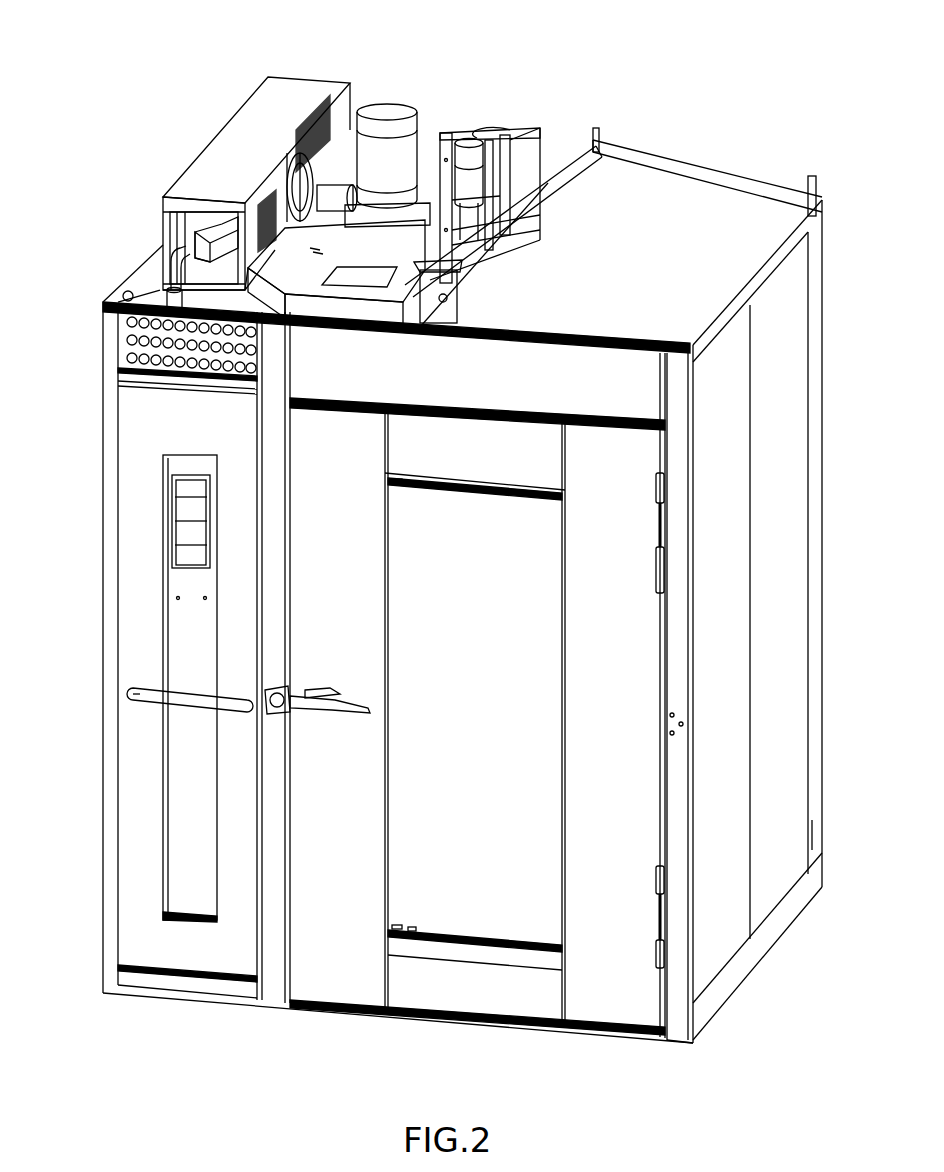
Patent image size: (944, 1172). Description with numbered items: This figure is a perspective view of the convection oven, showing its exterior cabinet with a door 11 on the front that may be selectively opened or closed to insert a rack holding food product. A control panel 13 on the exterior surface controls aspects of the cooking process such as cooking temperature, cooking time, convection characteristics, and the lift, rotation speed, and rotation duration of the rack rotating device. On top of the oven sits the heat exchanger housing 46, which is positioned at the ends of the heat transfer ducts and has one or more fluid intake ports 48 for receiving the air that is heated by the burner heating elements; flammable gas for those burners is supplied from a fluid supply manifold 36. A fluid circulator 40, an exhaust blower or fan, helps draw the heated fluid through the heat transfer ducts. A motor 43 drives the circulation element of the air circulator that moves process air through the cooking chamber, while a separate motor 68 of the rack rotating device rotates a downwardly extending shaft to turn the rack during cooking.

The door 11 is at (627, 596).
The control panel 13 is at (187, 518).
The fluid supply manifold 36 is at (183, 253).
The fluid circulator 40 is at (398, 162).
The motor 43 is at (420, 150).
The heat exchanger housing 46 is at (222, 132).
The fluid intake ports 48 is at (336, 185).
The motor 68 is at (468, 157).